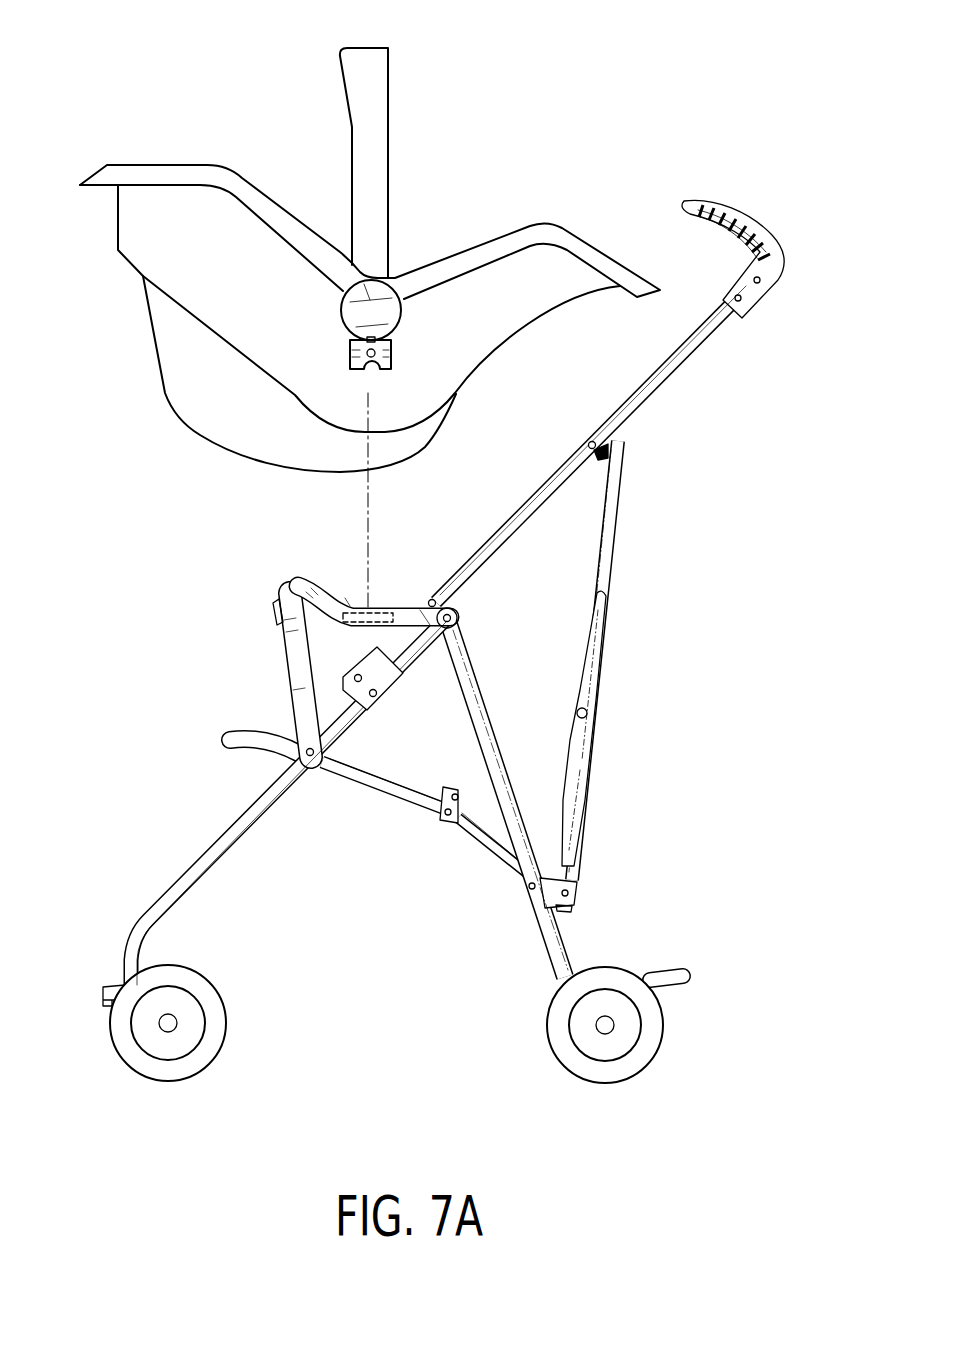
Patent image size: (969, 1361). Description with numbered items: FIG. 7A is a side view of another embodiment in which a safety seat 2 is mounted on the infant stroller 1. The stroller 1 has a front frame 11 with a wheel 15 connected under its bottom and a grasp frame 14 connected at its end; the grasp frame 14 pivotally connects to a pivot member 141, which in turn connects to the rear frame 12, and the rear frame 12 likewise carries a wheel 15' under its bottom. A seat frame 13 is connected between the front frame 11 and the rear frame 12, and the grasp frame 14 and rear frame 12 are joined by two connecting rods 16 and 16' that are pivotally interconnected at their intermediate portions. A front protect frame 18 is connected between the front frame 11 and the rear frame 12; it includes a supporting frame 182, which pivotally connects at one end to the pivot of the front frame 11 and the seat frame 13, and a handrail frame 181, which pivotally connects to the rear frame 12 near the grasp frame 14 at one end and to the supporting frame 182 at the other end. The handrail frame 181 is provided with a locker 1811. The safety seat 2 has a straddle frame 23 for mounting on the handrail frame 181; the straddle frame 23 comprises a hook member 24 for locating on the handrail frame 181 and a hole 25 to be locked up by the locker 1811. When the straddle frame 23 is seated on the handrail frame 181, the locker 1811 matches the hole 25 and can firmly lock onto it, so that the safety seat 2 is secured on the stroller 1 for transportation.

The stroller 1 is at (775, 680).
The safety seat 2 is at (562, 86).
The front frame 11 is at (196, 858).
The rear frame 12 is at (562, 932).
The seat frame 13 is at (430, 812).
The grasp frame 14 is at (640, 400).
The pivot member 141 is at (458, 607).
The wheel 15 is at (207, 1023).
The wheel 15' is at (568, 1025).
The connecting rod 16 is at (640, 660).
The connecting rod 16' is at (634, 728).
The front protect frame 18 is at (205, 622).
The handrail frame 181 is at (398, 605).
The locker 1811 is at (347, 603).
The supporting frame 182 is at (290, 660).
The straddle frame 23 is at (350, 250).
The hook member 24 is at (396, 335).
The hole 25 is at (392, 348).